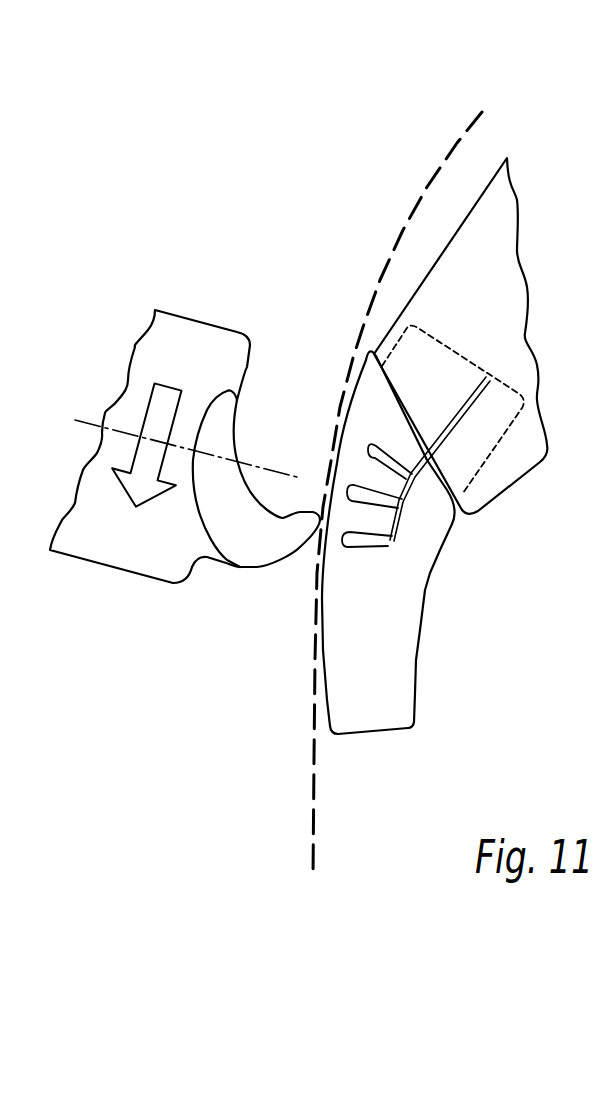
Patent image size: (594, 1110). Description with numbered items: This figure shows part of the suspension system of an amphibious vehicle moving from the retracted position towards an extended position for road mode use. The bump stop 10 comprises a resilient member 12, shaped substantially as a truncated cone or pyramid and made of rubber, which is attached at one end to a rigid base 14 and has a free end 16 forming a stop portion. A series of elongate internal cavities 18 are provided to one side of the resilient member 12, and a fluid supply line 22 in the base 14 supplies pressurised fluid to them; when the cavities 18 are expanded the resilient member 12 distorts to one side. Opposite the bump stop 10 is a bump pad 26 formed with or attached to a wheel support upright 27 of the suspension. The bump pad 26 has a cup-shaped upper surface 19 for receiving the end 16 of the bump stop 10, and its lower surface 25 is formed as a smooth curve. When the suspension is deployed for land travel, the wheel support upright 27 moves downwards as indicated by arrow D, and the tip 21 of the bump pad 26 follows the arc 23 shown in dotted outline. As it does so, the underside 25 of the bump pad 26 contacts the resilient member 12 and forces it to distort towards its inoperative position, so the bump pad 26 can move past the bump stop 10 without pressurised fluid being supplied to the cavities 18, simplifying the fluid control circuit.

The bump stop 10 is at (518, 641).
The resilient member 12 is at (385, 578).
The rigid base 14 is at (510, 475).
The free end 16 is at (382, 737).
The internal cavities 18 is at (413, 478).
The upper surface 19 is at (270, 477).
The tip 21 is at (316, 508).
The fluid supply line 22 is at (457, 417).
The arc 23 is at (418, 200).
The lower surface 25 is at (280, 563).
The bump pad 26 is at (247, 540).
The wheel support upright 27 is at (110, 547).
The arrow D is at (158, 413).